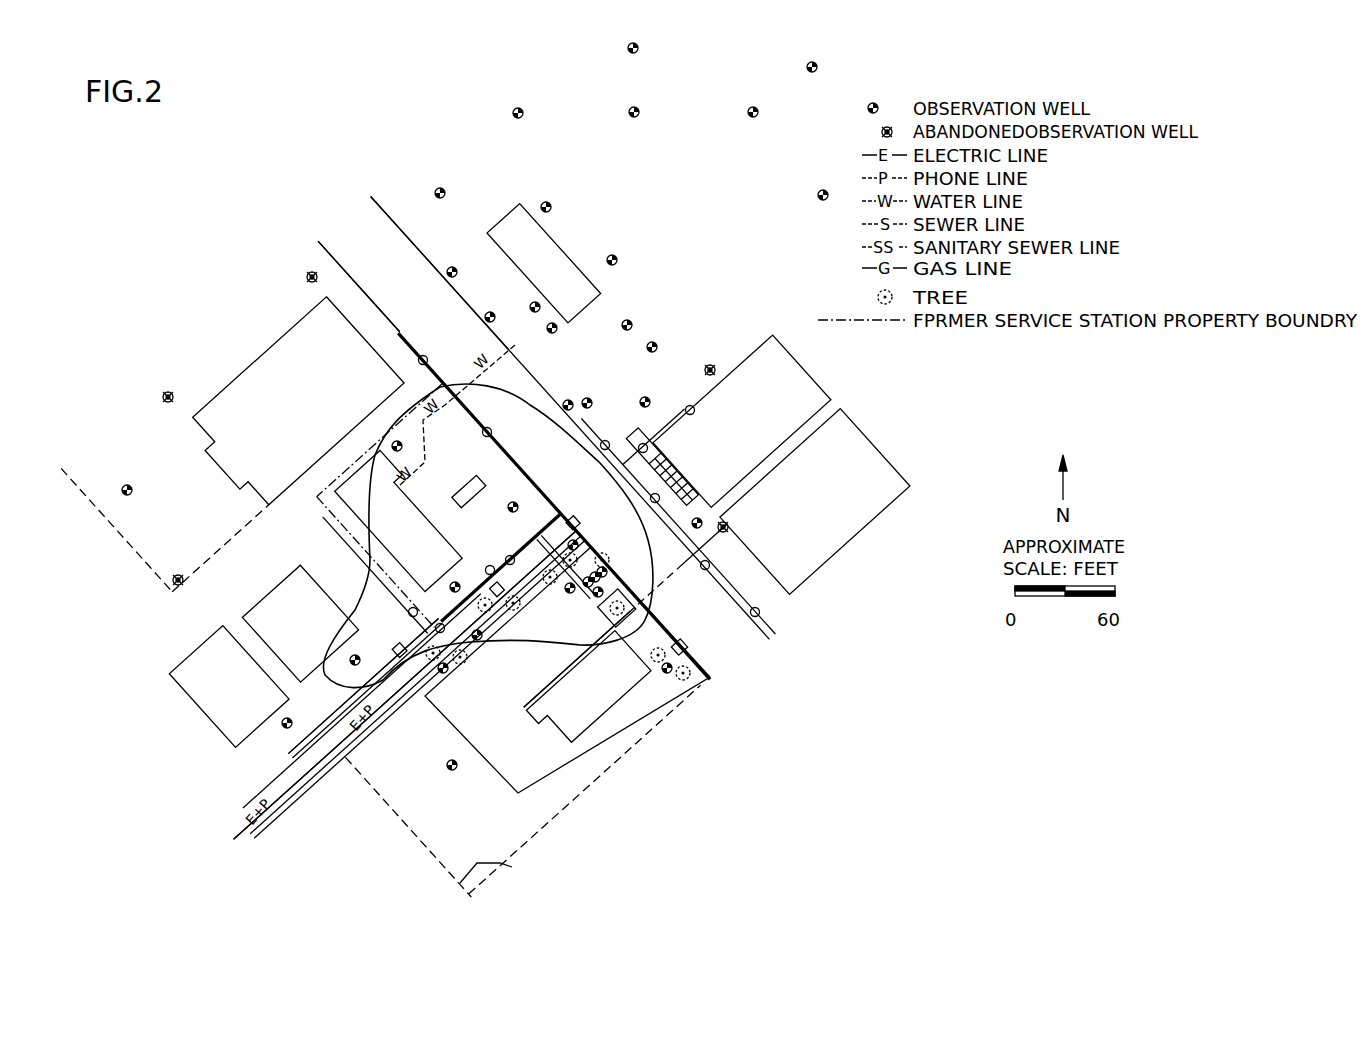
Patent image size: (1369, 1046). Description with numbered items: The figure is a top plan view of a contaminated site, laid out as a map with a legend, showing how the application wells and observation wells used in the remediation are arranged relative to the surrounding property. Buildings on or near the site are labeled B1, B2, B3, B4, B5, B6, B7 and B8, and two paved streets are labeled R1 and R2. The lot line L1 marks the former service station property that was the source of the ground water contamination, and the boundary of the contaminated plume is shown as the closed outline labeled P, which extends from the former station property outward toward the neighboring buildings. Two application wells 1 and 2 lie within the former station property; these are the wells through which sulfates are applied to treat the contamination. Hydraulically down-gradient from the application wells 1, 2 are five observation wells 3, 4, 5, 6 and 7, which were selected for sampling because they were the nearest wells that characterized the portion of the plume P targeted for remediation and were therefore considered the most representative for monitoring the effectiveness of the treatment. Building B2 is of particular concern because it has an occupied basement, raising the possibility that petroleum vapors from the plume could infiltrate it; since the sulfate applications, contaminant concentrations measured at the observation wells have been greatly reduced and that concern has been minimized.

The application well 1 is at (513, 507).
The application well 2 is at (576, 524).
The observation well 3 is at (577, 544).
The observation well 4 is at (592, 592).
The observation well 5 is at (597, 577).
The observation well 6 is at (603, 593).
The observation well 7 is at (568, 590).
The building B1 is at (403, 539).
The building B2 is at (311, 632).
The building B3 is at (235, 695).
The building B4 is at (310, 402).
The building B5 is at (548, 262).
The building B6 is at (753, 429).
The building B7 is at (821, 520).
The building B8 is at (504, 702).
The paved street R1 is at (561, 458).
The paved street R2 is at (265, 800).
The lot line L1 is at (347, 523).
The boundary of the contaminated plume P is at (367, 587).